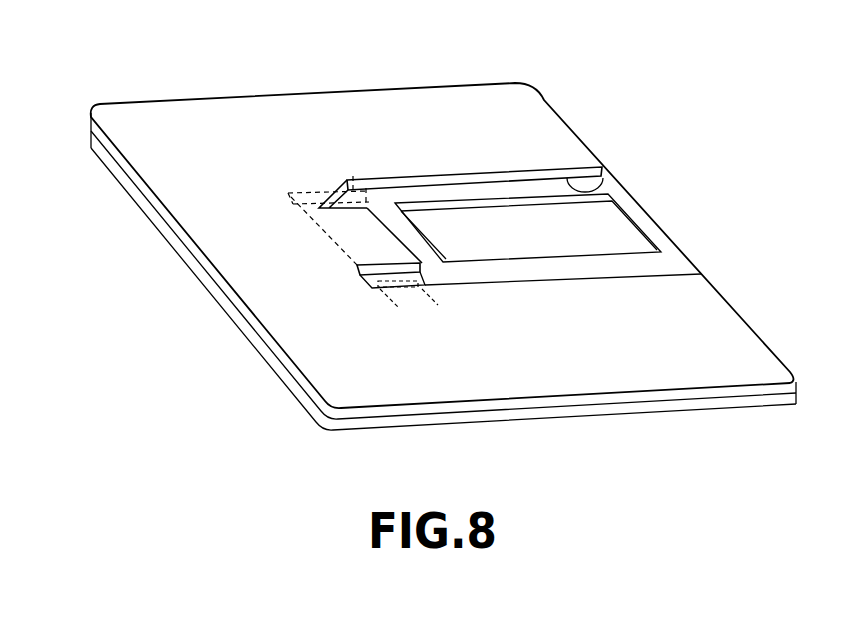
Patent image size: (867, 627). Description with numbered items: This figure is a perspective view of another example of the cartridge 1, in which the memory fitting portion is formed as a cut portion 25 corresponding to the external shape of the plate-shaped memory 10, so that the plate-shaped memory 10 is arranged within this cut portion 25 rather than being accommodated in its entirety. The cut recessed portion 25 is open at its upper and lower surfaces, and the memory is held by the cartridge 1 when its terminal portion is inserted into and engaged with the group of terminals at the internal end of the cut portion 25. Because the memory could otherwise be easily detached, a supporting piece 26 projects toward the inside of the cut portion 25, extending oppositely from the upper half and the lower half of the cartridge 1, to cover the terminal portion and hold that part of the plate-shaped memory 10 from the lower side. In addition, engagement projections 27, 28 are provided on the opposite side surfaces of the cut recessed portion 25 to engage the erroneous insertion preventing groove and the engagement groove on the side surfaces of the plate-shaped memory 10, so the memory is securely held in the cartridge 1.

The cartridge 1 is at (497, 87).
The plate-shaped memory 10 is at (656, 219).
The cut portion 25 is at (604, 179).
The supporting piece 26 is at (374, 242).
The engagement projection 27 is at (353, 176).
The engagement projection 28 is at (403, 289).